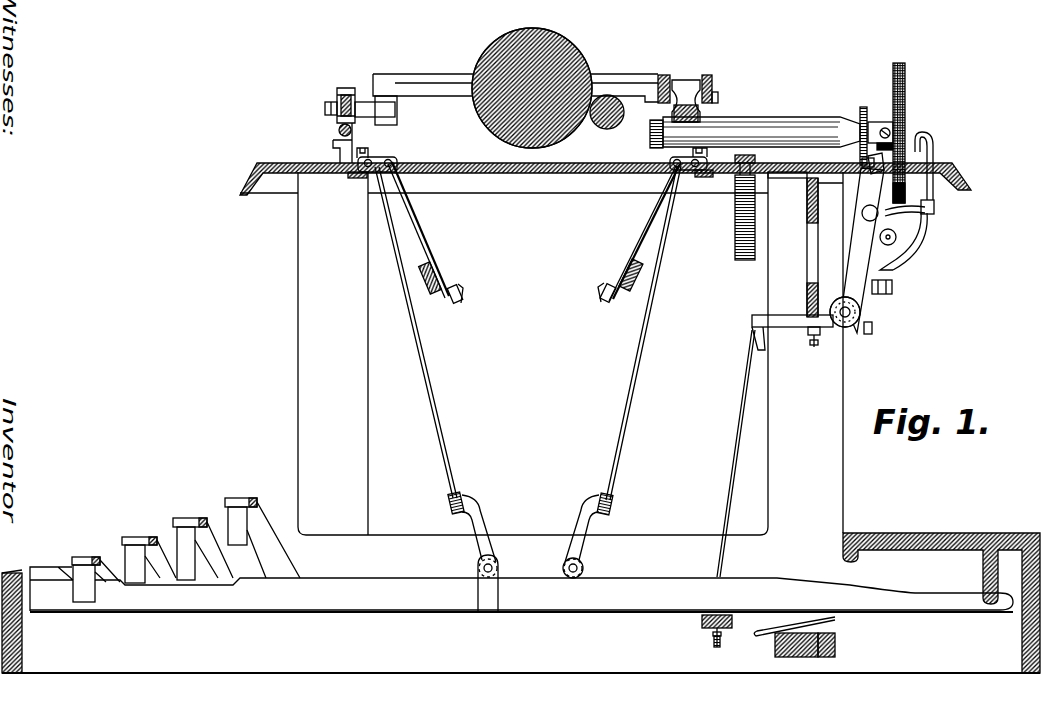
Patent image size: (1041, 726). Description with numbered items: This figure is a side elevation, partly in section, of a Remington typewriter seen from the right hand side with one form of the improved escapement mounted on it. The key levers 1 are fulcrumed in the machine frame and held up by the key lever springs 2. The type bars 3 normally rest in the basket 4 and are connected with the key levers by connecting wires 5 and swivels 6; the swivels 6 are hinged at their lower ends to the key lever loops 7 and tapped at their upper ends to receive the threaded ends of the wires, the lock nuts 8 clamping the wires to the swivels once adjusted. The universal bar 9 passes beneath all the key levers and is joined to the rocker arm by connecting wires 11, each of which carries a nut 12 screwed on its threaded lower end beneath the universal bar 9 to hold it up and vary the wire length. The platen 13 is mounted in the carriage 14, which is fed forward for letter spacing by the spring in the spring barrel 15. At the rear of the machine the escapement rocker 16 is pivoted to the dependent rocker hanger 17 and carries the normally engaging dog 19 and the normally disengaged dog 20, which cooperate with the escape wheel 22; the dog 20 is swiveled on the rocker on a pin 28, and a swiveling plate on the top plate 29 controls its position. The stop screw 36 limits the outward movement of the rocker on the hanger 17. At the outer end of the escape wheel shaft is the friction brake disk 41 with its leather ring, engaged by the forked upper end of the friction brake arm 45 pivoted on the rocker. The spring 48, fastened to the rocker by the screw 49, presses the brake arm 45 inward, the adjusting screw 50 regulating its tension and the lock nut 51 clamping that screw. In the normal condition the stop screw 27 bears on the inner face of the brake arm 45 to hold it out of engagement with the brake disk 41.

The key levers 1 is at (300, 576).
The key lever springs 2 is at (758, 638).
The type bars 3 is at (423, 232).
The basket 4 is at (439, 298).
The connecting wires 5 is at (432, 406).
The swivels 6 is at (484, 514).
The key lever loops 7 is at (488, 614).
The lock nuts 8 is at (450, 497).
The universal bar 9 is at (701, 621).
The connecting wires 11 is at (723, 503).
The nut 12 is at (710, 632).
The platen 13 is at (577, 58).
The carriage 14 is at (660, 75).
The spring barrel 15 is at (735, 242).
The escapement rocker 16 is at (862, 292).
The rocker hanger 17 is at (809, 352).
The normally engaging dog 19 is at (860, 163).
The normally disengaged dog 20 is at (880, 163).
The escape wheel 22 is at (863, 107).
The stop screw 27 is at (935, 207).
The pin 28 is at (937, 150).
The top plate 29 is at (783, 178).
The stop screw 36 is at (804, 341).
The friction brake disk 41 is at (906, 76).
The friction brake arm 45 is at (932, 139).
The spring 48 is at (925, 228).
The screw 49 is at (868, 324).
The adjusting screw 50 is at (892, 290).
The lock nut 51 is at (895, 268).